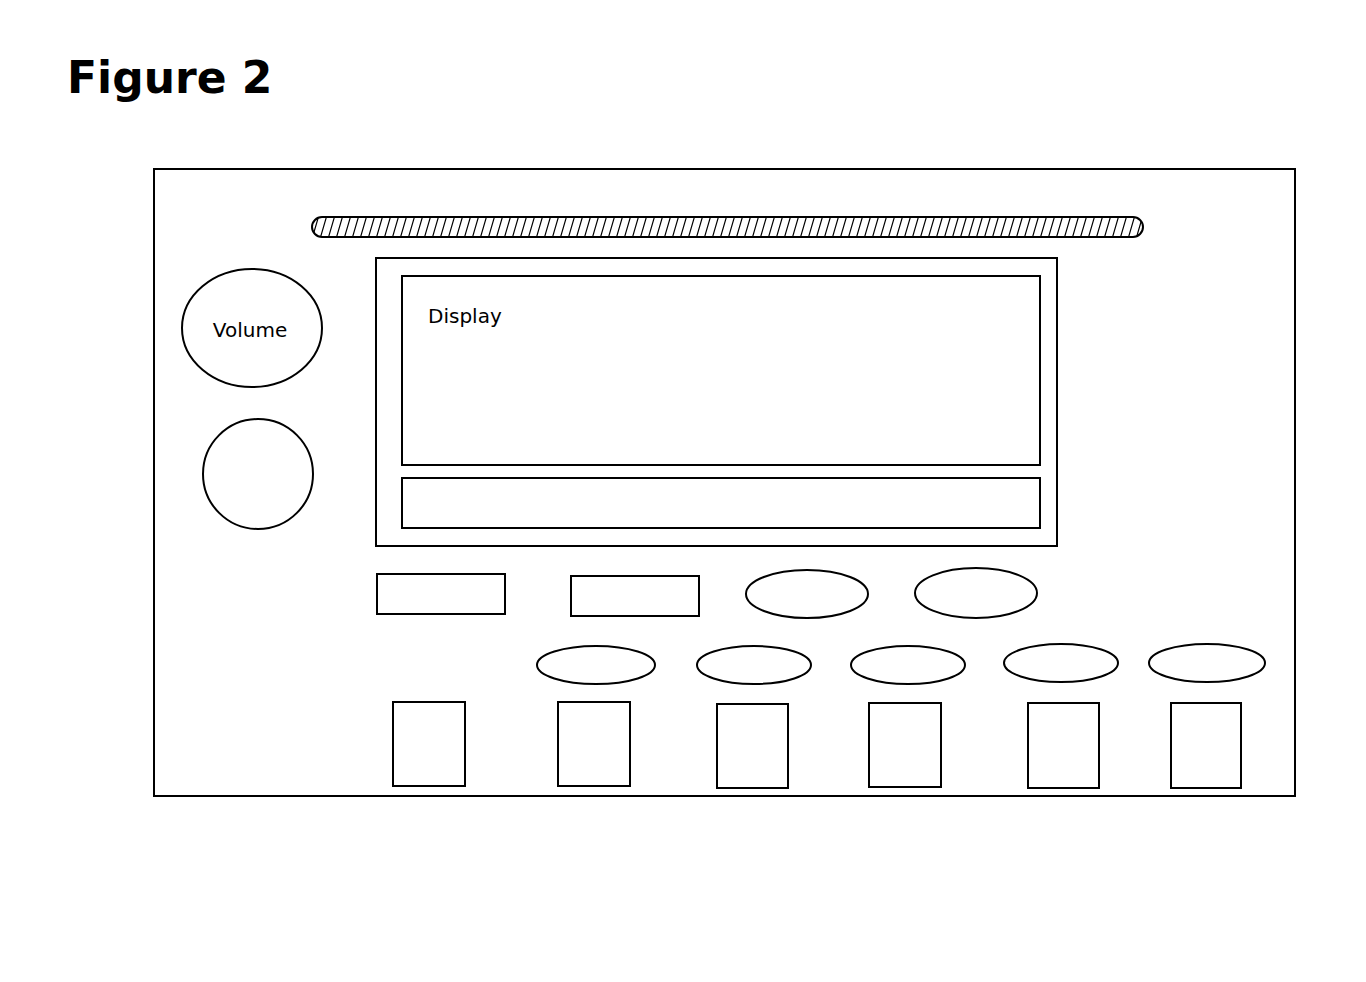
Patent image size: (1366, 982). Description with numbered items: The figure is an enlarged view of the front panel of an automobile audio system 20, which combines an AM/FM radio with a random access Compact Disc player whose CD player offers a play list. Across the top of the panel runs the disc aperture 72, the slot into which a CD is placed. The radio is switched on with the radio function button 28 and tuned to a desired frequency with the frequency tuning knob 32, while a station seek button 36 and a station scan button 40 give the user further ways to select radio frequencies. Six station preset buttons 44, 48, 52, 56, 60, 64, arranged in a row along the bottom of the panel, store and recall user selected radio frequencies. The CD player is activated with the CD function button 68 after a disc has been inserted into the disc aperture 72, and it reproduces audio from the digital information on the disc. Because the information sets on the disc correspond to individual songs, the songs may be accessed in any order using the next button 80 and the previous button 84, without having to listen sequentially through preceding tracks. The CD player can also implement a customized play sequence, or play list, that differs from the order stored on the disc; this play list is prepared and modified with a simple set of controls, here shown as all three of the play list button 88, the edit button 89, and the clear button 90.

The audio system 20 is at (692, 190).
The disc aperture 72 is at (1068, 223).
The frequency tuning knob 32 is at (263, 517).
The station seek button 36 is at (392, 580).
The station scan button 40 is at (585, 578).
The radio function button 28 is at (757, 590).
The CD function button 68 is at (1024, 600).
The next button 80 is at (560, 660).
The previous button 84 is at (708, 664).
The play list button 88 is at (862, 665).
The edit button 89 is at (1086, 655).
The clear button 90 is at (1250, 664).
The station preset button 44 is at (410, 772).
The station preset button 48 is at (614, 778).
The station preset button 52 is at (740, 774).
The station preset button 56 is at (912, 772).
The station preset button 60 is at (1073, 773).
The station preset button 64 is at (1188, 777).